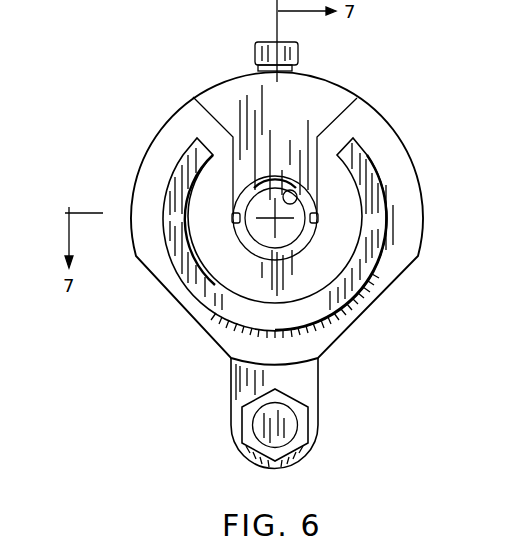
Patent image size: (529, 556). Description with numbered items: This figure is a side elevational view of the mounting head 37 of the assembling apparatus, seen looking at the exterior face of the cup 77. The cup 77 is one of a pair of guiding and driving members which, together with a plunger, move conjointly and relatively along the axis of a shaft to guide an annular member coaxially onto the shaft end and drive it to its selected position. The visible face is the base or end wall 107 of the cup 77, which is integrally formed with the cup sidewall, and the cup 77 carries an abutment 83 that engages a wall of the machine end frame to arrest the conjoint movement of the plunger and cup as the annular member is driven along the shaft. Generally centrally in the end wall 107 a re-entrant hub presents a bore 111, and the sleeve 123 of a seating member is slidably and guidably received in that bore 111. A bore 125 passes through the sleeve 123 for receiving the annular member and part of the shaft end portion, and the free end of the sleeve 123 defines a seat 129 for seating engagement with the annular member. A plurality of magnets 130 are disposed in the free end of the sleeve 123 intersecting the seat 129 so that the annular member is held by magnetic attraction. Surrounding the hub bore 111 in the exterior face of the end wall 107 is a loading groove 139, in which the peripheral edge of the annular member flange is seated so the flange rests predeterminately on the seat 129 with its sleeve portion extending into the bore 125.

The head 37 is at (300, 262).
The cup 77 is at (172, 117).
The abutment 83 is at (353, 283).
The end wall 107 is at (365, 120).
The bore 111 is at (297, 256).
The sleeve 123 is at (304, 236).
The bore 125 is at (294, 192).
The seat 129 is at (250, 244).
The magnets 130 is at (235, 219).
The loading groove 139 is at (315, 140).